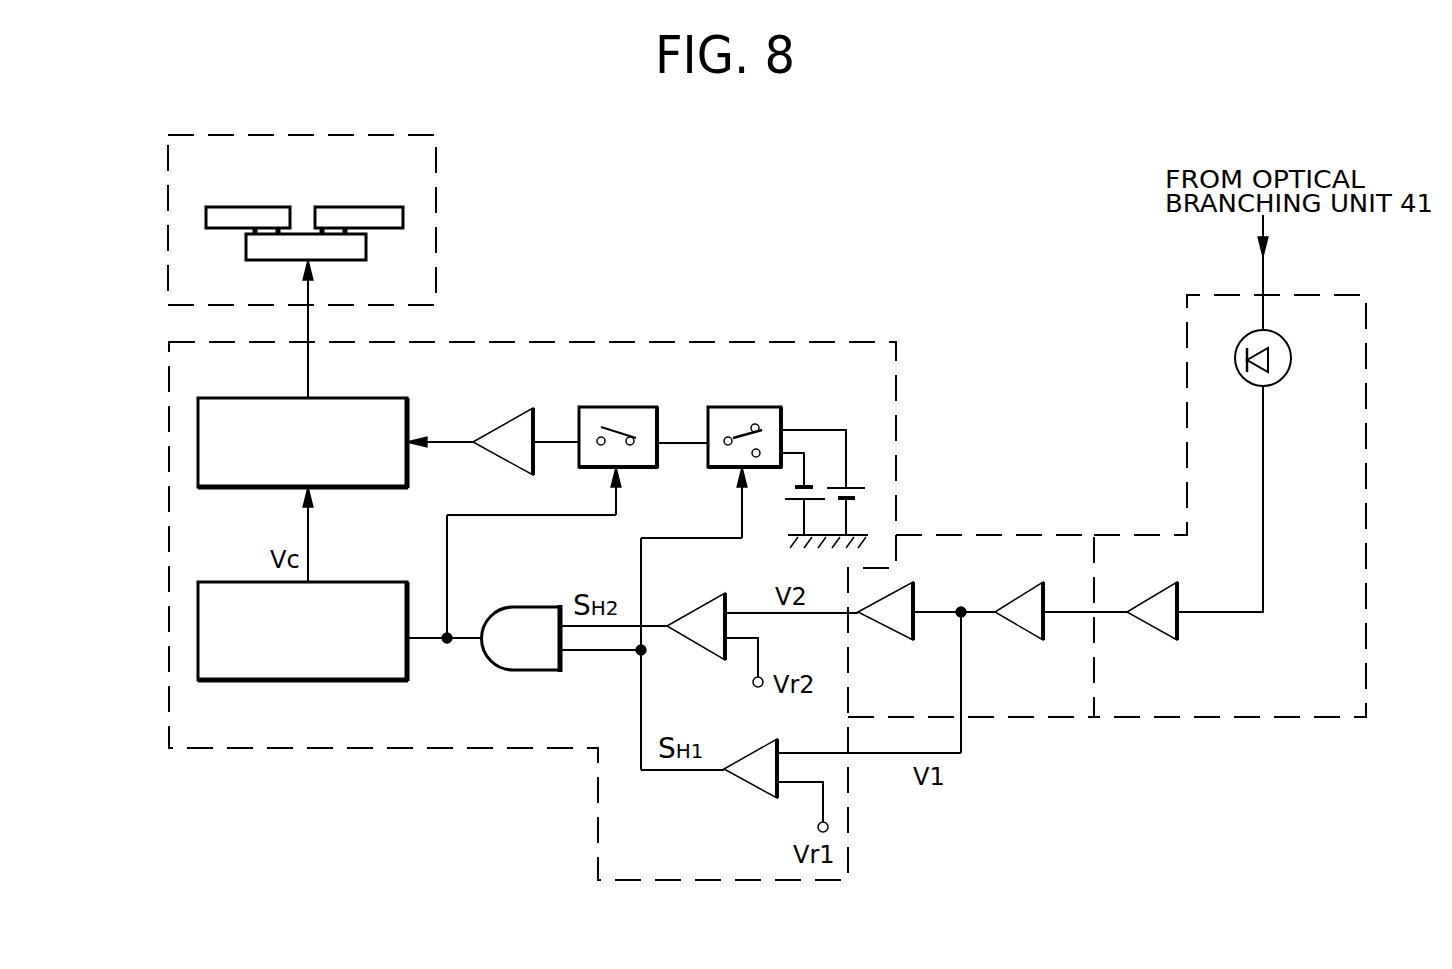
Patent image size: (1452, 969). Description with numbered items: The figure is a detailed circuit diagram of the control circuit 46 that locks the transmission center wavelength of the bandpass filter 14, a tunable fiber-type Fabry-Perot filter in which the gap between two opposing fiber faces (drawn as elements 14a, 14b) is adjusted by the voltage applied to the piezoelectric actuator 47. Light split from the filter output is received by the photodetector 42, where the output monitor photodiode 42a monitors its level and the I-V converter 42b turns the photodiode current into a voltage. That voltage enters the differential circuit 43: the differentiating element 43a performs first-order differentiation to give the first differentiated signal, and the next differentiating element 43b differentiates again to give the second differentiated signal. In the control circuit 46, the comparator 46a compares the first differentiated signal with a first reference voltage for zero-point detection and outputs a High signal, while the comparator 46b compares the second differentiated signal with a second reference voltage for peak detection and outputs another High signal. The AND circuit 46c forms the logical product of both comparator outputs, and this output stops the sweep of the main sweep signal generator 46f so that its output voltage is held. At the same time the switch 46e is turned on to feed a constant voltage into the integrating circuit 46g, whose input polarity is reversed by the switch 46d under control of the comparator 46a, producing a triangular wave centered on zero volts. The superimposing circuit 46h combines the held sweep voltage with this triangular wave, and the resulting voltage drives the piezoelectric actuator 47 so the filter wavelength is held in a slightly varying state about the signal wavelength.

The bandpass filter 14 is at (436, 180).
The light receiving element 14a is at (242, 220).
The light receiving element 14b is at (346, 217).
The piezoelectric actuator 47 is at (357, 253).
The control circuit 46 is at (787, 340).
The comparator 46a is at (740, 780).
The comparator 46b is at (700, 607).
The AND circuit 46c is at (525, 607).
The switch 46d is at (748, 407).
The switch 46e is at (612, 407).
The main sweep signal generator 46f is at (347, 582).
The integrating circuit 46g is at (492, 426).
The superimposing circuit 46h is at (340, 398).
The photodetector 42 is at (1187, 362).
The output monitor photodiode 42a is at (1273, 384).
The I-V converter 42b is at (1157, 633).
The differential circuit 43 is at (965, 535).
The differentiating element 43a is at (1025, 633).
The differentiating element 43b is at (888, 633).